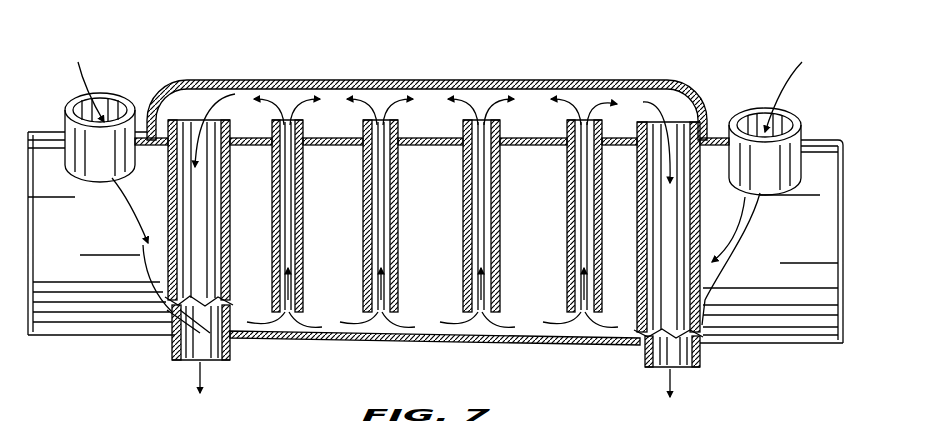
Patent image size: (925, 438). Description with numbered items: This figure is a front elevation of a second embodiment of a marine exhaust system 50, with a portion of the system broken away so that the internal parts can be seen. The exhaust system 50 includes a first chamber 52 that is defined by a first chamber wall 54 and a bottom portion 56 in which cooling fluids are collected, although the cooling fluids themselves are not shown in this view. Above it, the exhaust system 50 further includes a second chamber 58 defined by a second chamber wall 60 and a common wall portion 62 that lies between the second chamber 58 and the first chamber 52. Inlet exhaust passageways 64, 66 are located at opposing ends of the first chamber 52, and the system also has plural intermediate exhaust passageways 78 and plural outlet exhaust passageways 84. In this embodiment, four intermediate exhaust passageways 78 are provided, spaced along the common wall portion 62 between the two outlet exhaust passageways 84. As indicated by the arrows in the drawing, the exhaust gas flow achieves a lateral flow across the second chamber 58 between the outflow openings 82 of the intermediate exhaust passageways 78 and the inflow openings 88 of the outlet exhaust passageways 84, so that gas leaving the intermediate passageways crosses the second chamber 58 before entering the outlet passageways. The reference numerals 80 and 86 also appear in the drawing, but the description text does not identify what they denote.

The exhaust system 50 is at (725, 42).
The first chamber 52 is at (446, 238).
The first chamber wall 54 is at (846, 175).
The bottom portion 56 is at (713, 282).
The second chamber 58 is at (425, 103).
The second chamber wall 60 is at (410, 81).
The common wall portion 62 is at (248, 144).
The inlet exhaust passageway 64 is at (803, 133).
The inlet exhaust passageway 66 is at (65, 118).
The intermediate exhaust passageway 78 is at (358, 205).
The tube outlet flow 80 is at (358, 303).
The outflow opening 82 is at (282, 121).
The outlet exhaust passageway 84 is at (168, 183).
The outlet fitting 86 is at (170, 343).
The inflow opening 88 is at (148, 140).